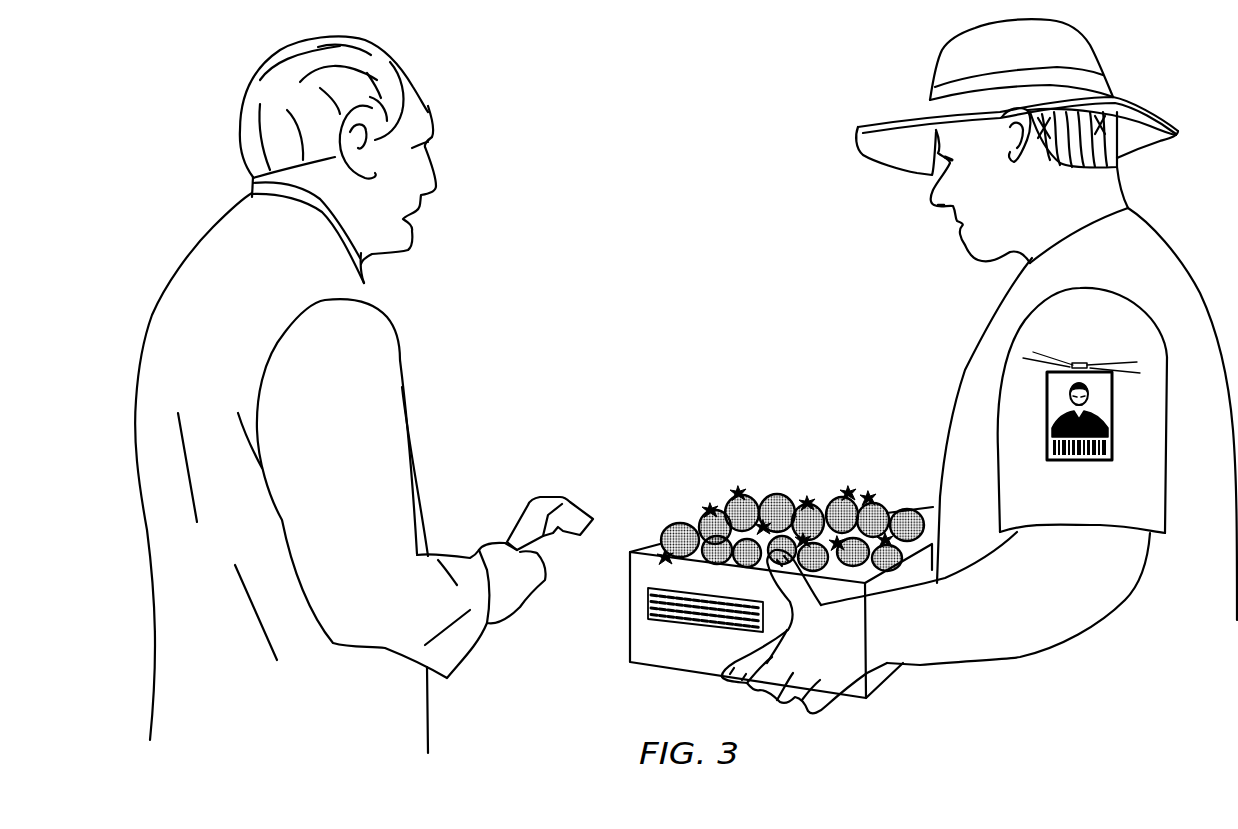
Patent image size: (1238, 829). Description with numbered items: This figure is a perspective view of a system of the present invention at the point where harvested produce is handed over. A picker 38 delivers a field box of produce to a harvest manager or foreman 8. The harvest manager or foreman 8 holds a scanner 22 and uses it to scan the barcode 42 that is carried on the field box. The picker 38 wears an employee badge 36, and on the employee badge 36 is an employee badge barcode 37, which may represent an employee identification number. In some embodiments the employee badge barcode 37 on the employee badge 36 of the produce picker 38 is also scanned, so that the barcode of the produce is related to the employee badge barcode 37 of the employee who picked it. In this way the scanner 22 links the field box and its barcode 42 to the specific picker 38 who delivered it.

The harvest manager or foreman 8 is at (274, 303).
The scanner 22 is at (566, 507).
The employee badge 36 is at (1057, 387).
The employee badge barcode 37 is at (1052, 448).
The picker 38 is at (1133, 279).
The barcode 42 is at (663, 623).